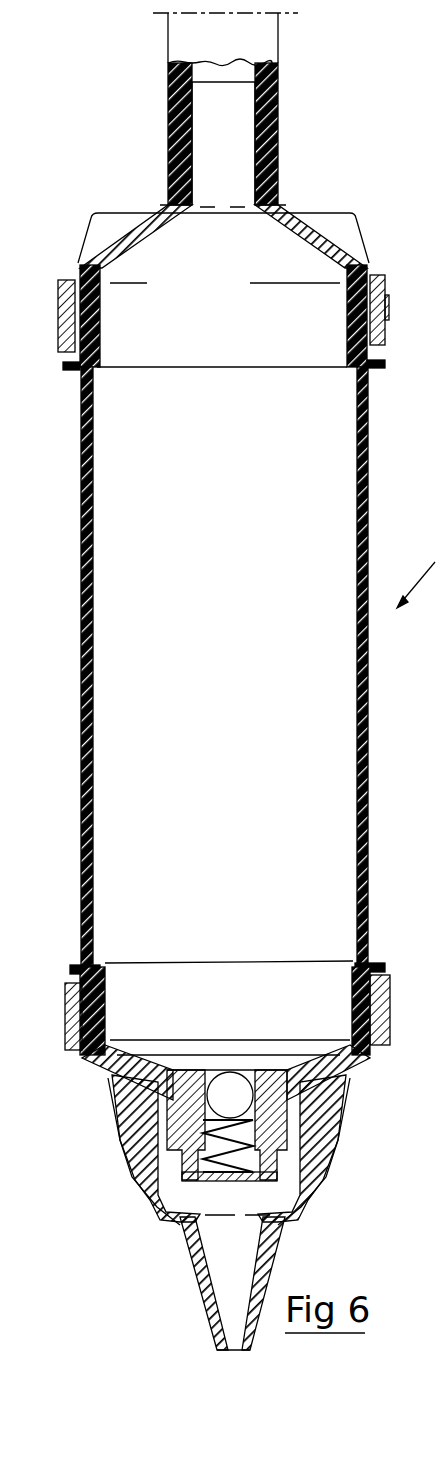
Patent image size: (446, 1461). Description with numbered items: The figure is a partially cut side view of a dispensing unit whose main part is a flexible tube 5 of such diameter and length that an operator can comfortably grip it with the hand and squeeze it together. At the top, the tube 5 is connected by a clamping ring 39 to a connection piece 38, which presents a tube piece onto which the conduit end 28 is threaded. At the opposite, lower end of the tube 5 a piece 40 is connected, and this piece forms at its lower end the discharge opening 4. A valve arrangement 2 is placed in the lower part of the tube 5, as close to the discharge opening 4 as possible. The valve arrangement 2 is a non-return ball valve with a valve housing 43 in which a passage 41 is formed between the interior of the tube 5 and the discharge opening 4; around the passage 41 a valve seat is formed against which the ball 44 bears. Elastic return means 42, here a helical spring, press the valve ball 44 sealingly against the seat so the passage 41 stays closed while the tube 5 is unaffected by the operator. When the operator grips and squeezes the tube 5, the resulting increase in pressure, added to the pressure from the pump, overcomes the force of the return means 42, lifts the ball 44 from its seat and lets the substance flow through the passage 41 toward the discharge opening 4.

The conduit end 28 is at (257, 42).
The connection piece 38 is at (313, 237).
The clamping ring 39 is at (388, 317).
The flexible tube 5 is at (362, 727).
The valve arrangement 2 is at (180, 1055).
The piece 40 is at (327, 1155).
The valve housing 43 is at (195, 1068).
The valve ball 44 is at (243, 1095).
The passage 41 is at (237, 1078).
The elastic return means 42 is at (233, 1182).
The discharge opening 4 is at (228, 1340).